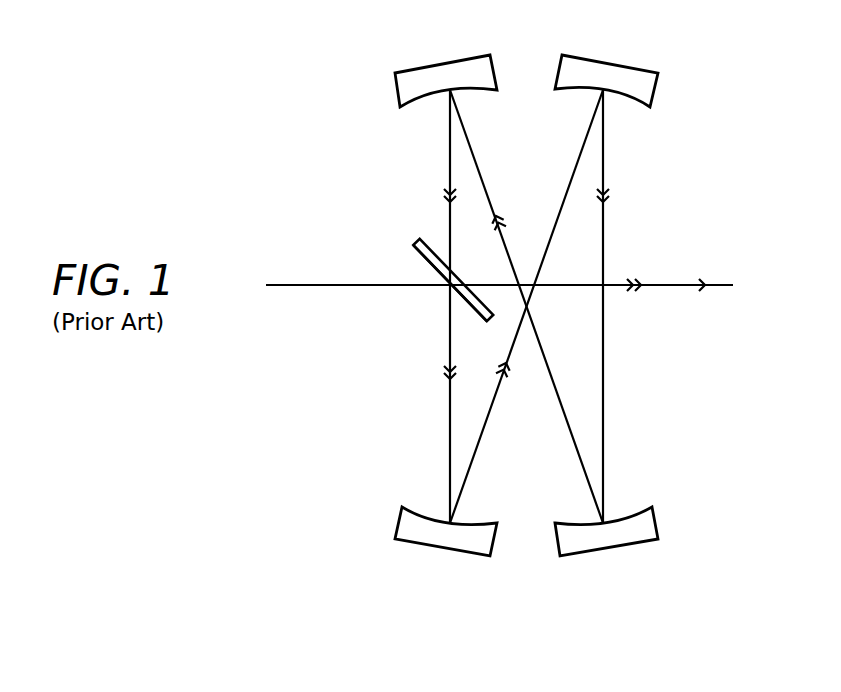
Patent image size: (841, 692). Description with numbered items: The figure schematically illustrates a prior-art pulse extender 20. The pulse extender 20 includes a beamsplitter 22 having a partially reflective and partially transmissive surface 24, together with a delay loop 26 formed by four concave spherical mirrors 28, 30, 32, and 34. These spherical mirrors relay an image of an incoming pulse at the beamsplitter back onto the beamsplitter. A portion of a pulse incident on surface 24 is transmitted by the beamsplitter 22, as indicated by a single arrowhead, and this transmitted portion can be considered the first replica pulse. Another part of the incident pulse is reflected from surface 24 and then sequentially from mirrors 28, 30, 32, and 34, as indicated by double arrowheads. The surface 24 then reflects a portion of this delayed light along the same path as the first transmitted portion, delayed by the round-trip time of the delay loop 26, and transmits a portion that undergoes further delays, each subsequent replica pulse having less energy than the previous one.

The pulse extender 20 is at (278, 367).
The beamsplitter 22 is at (413, 243).
The partially reflective and partially transmissive surface 24 is at (423, 262).
The delay loop 26 is at (542, 175).
The concave spherical mirror 28 is at (403, 518).
The concave spherical mirror 30 is at (650, 90).
The concave spherical mirror 32 is at (652, 525).
The concave spherical mirror 34 is at (402, 83).